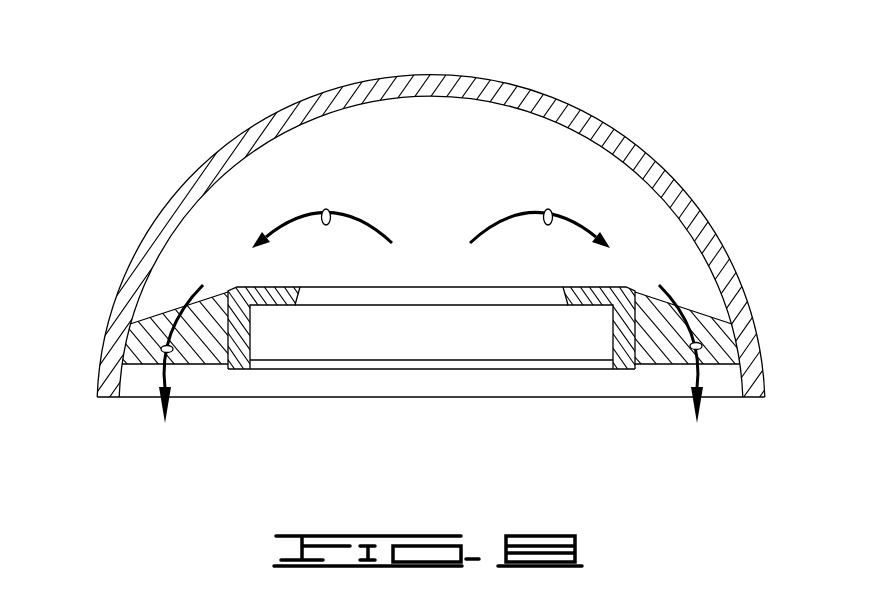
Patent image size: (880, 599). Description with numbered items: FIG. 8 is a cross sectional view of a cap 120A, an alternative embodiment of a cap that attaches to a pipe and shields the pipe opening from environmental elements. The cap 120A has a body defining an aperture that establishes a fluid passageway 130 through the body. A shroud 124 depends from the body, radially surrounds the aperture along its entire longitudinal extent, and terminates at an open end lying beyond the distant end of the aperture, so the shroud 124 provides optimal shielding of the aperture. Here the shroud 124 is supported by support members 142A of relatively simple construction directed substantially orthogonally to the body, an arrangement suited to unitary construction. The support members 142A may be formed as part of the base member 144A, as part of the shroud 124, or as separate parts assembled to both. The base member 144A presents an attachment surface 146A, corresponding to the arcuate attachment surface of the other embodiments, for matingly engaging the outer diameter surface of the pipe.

The cap 120A is at (246, 61).
The shroud 124 is at (590, 111).
The fluid passageway 130 is at (326, 209).
The support members 142A is at (150, 318).
The base member 144A is at (603, 287).
The recess 146A is at (250, 337).